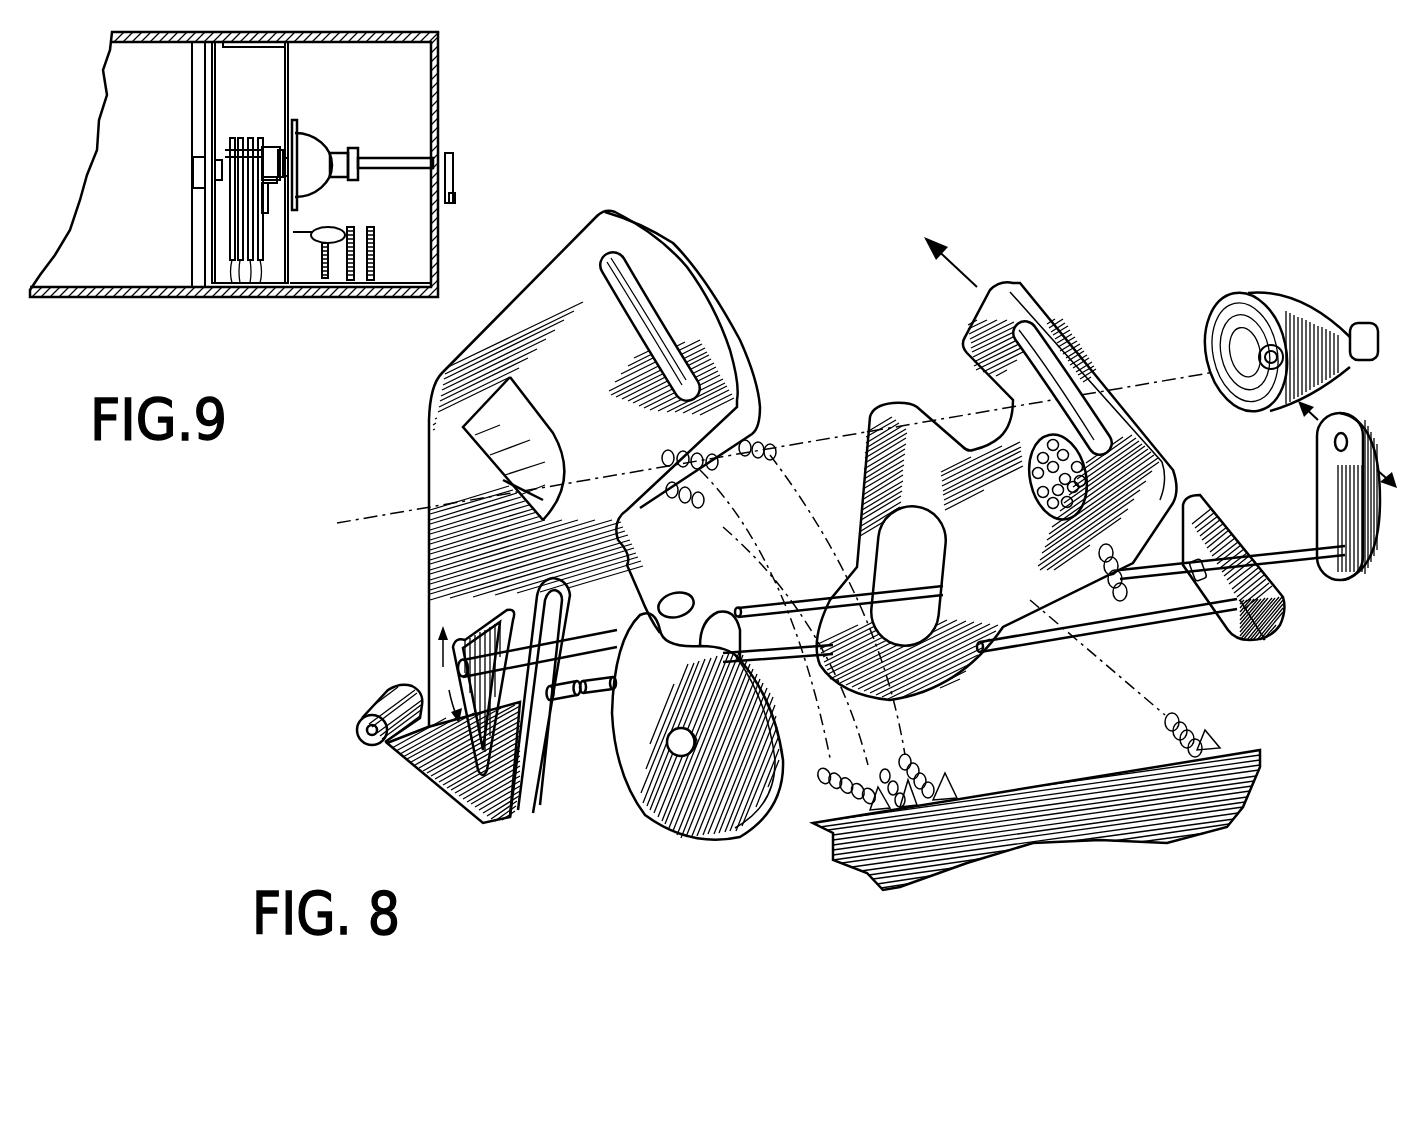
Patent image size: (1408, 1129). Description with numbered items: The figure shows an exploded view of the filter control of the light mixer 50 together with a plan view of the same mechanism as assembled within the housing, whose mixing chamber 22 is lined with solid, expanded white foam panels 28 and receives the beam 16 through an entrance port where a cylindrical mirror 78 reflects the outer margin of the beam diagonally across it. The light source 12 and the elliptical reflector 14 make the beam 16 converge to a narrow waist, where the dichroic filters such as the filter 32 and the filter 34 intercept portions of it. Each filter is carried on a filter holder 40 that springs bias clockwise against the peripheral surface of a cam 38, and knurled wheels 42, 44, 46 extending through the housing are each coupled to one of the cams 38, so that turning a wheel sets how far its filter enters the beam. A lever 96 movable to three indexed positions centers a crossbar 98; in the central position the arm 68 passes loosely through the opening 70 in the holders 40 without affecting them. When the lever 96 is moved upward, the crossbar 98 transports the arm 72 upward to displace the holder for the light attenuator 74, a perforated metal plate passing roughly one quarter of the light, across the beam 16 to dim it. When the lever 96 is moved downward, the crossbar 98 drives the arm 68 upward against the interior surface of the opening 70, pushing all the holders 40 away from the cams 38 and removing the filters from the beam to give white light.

In FIG. 8, the light source 12 is at (1265, 365).
In FIG. 9, the elliptical reflector 14 is at (307, 140).
In FIG. 8, the elliptical reflector 14 is at (1337, 340).
In FIG. 8, the light beam 16 is at (805, 445).
In FIG. 9, the mixing chamber 22 is at (147, 267).
In FIG. 9, the white foam panels 28 is at (152, 42).
In FIG. 8, the dichroic filter 32 is at (490, 430).
In FIG. 8, the dichroic filter 34 is at (503, 473).
In FIG. 8, the cams 38 is at (697, 622).
In FIG. 9, the filter holders 40 is at (250, 138).
In FIG. 8, the filter holders 40 is at (547, 290).
In FIG. 9, the knurled wheel 42 is at (330, 258).
In FIG. 9, the knurled wheel 44 is at (353, 268).
In FIG. 9, the knurled wheel 46 is at (375, 258).
In FIG. 9, the light mixer 50 is at (325, 295).
In FIG. 8, the light mixer 50 is at (1036, 801).
In FIG. 9, the arm 68 is at (272, 146).
In FIG. 8, the opening 70 is at (417, 777).
In FIG. 9, the arm 72 is at (268, 181).
In FIG. 8, the arm 72 is at (1185, 627).
In FIG. 9, the light attenuator 74 is at (265, 210).
In FIG. 8, the light attenuator 74 is at (1090, 458).
In FIG. 9, the cylindrical mirror 78 is at (195, 180).
In FIG. 9, the lever 96 is at (452, 185).
In FIG. 8, the lever 96 is at (1350, 582).
In FIG. 8, the crossbar 98 is at (1265, 632).